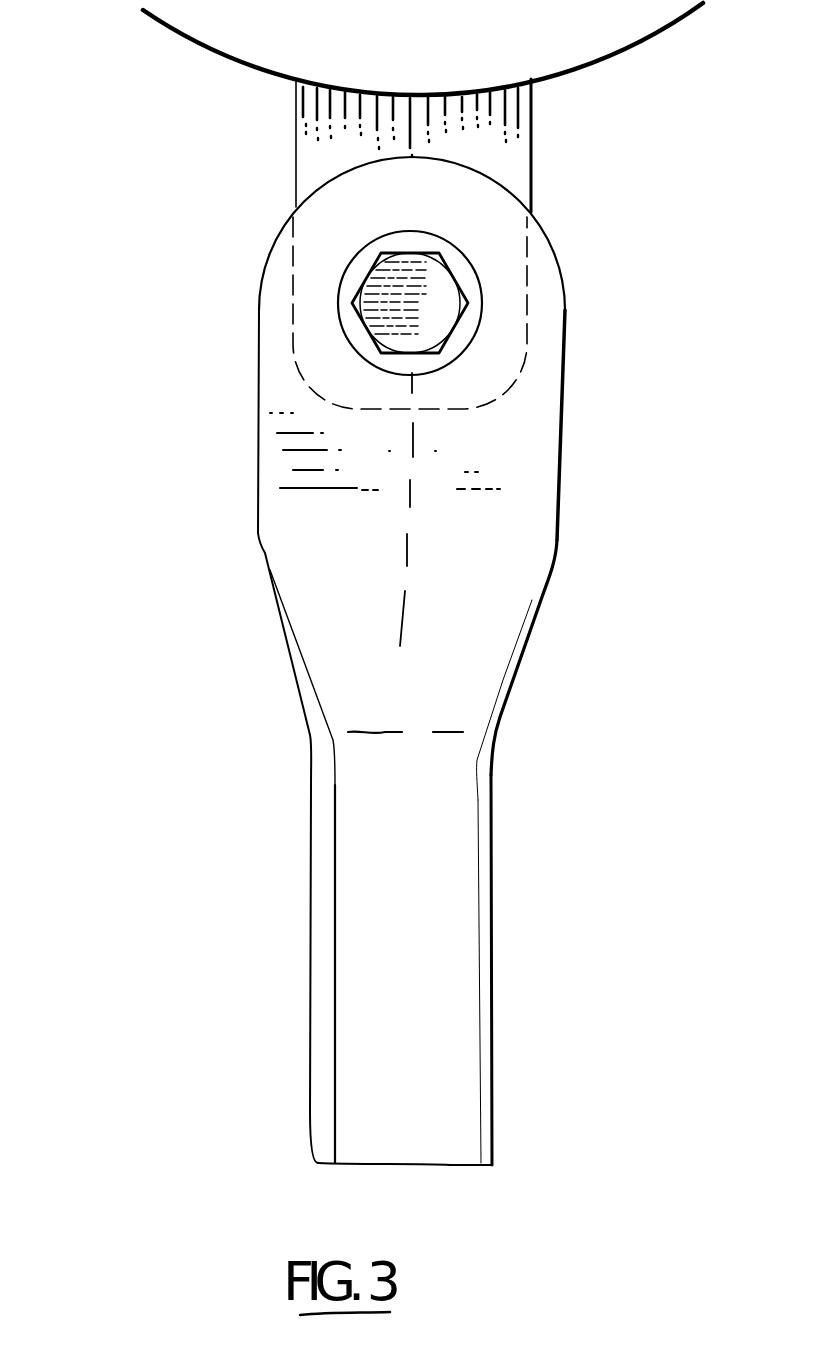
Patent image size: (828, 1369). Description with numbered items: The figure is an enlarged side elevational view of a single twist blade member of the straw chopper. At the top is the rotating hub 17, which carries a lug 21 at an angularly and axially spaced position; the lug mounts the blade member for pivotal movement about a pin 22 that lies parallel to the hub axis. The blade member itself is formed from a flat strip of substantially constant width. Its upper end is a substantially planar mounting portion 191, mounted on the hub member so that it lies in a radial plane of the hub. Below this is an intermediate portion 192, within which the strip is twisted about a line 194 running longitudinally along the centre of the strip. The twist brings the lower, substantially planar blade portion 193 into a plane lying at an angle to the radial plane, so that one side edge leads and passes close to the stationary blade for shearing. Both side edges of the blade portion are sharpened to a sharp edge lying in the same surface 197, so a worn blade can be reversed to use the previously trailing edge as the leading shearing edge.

The hub 17 is at (208, 45).
The lug 21 is at (318, 145).
The pin 22 is at (433, 323).
The mounting portion 191 is at (267, 432).
The intermediate portion 192 is at (510, 613).
The blade portion 193 is at (475, 919).
The line 194 is at (407, 548).
The surface 197 is at (415, 1128).